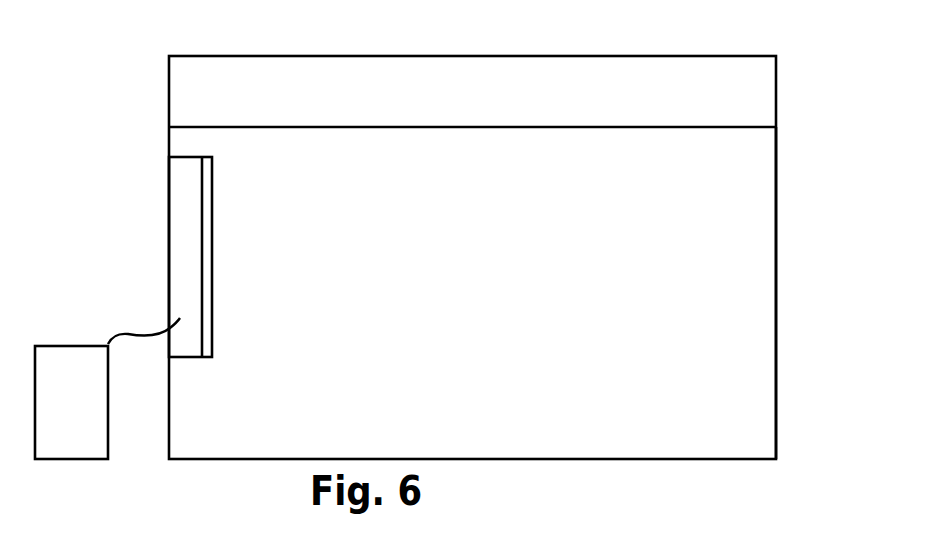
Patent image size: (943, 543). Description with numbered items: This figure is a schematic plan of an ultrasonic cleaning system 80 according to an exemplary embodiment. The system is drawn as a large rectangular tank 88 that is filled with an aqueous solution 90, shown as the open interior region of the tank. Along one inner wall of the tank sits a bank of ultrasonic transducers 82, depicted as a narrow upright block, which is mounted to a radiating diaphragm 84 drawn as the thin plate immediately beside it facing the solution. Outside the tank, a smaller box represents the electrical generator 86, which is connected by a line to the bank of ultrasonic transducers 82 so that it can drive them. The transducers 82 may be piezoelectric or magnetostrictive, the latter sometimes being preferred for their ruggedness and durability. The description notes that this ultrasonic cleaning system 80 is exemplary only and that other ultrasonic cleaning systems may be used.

The ultrasonic cleaning system 80 is at (583, 50).
The ultrasonic transducers 82 is at (183, 235).
The radiating diaphragm 84 is at (213, 258).
The electrical generator 86 is at (70, 435).
The tank 88 is at (777, 257).
The aqueous solution 90 is at (733, 175).